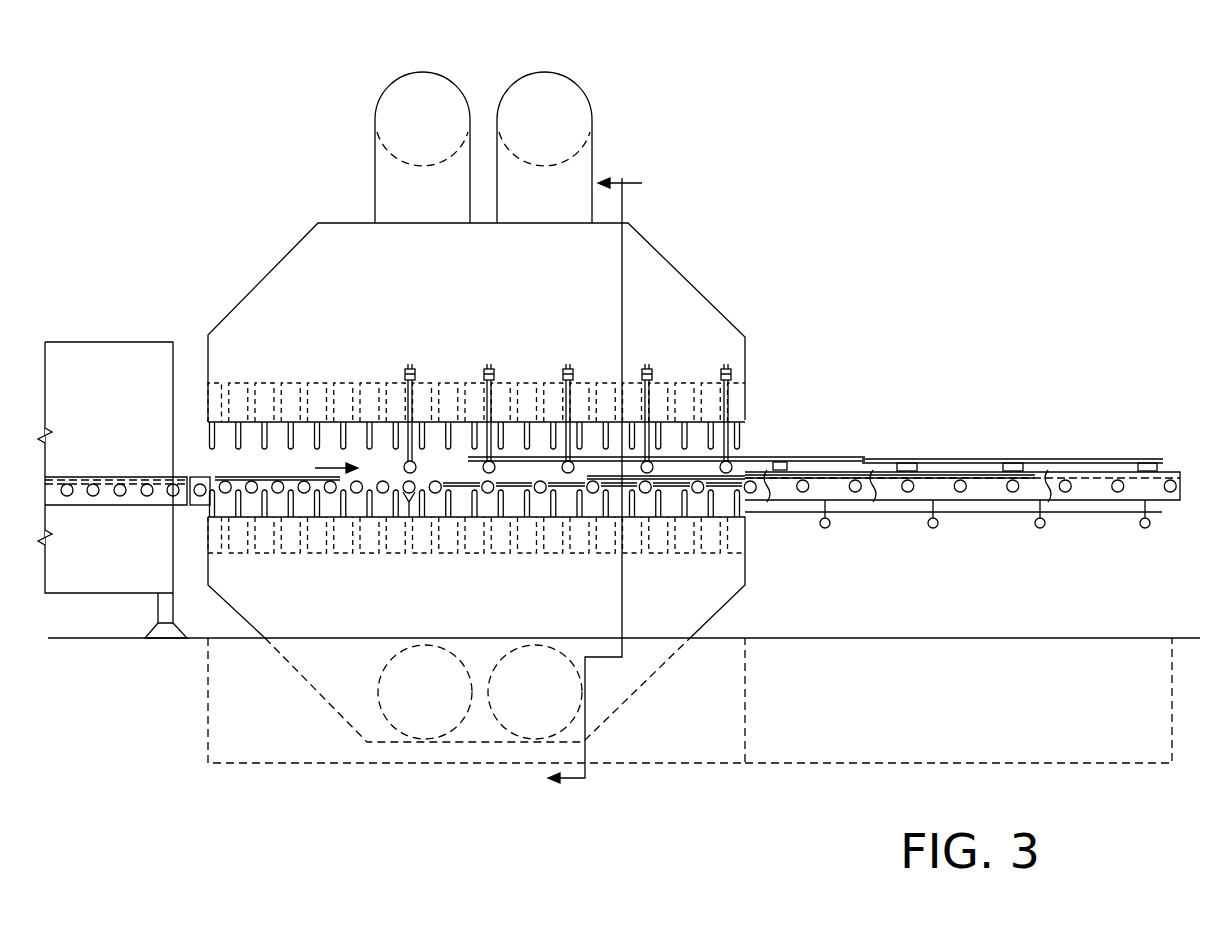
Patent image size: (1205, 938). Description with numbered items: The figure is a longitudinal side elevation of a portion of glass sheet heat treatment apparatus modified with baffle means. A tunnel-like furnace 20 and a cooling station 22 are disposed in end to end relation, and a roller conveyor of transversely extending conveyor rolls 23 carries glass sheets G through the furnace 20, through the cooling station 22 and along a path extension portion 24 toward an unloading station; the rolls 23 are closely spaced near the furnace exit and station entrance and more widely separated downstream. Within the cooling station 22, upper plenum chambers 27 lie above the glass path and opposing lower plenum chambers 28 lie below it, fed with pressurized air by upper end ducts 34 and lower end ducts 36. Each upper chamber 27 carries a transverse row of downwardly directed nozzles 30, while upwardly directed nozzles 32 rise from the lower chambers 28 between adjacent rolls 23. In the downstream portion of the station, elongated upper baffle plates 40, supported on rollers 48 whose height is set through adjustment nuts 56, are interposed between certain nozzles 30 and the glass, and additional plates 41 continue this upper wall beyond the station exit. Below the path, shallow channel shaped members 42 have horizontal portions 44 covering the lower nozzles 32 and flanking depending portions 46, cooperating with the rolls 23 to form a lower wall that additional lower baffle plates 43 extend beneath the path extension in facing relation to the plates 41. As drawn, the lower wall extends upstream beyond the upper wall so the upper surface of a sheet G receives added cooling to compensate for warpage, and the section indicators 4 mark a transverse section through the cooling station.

The tunnel-like furnace 20 is at (103, 336).
The cooling station 22 is at (322, 208).
The conveyor rolls 23 is at (108, 494).
The path extension portion 24 is at (893, 360).
The upper plenum chambers 27 is at (325, 382).
The lower plenum chambers 28 is at (590, 553).
The nozzles 30 is at (359, 469).
The nozzles 32 is at (407, 500).
The upper end ducts 34 is at (498, 95).
The lower end ducts 36 is at (465, 656).
The elongated plates 40 is at (772, 457).
The additional plates 41 is at (930, 458).
The channel shaped members 42 is at (500, 481).
The additional lower baffle plates 43 is at (880, 513).
The horizontal portions 44 is at (468, 483).
The depending portions 46 is at (528, 492).
The rollers 48 is at (747, 460).
The adjustment nuts 56 is at (565, 370).
The section line 4- 4 is at (594, 483).
The glass sheets G is at (250, 478).